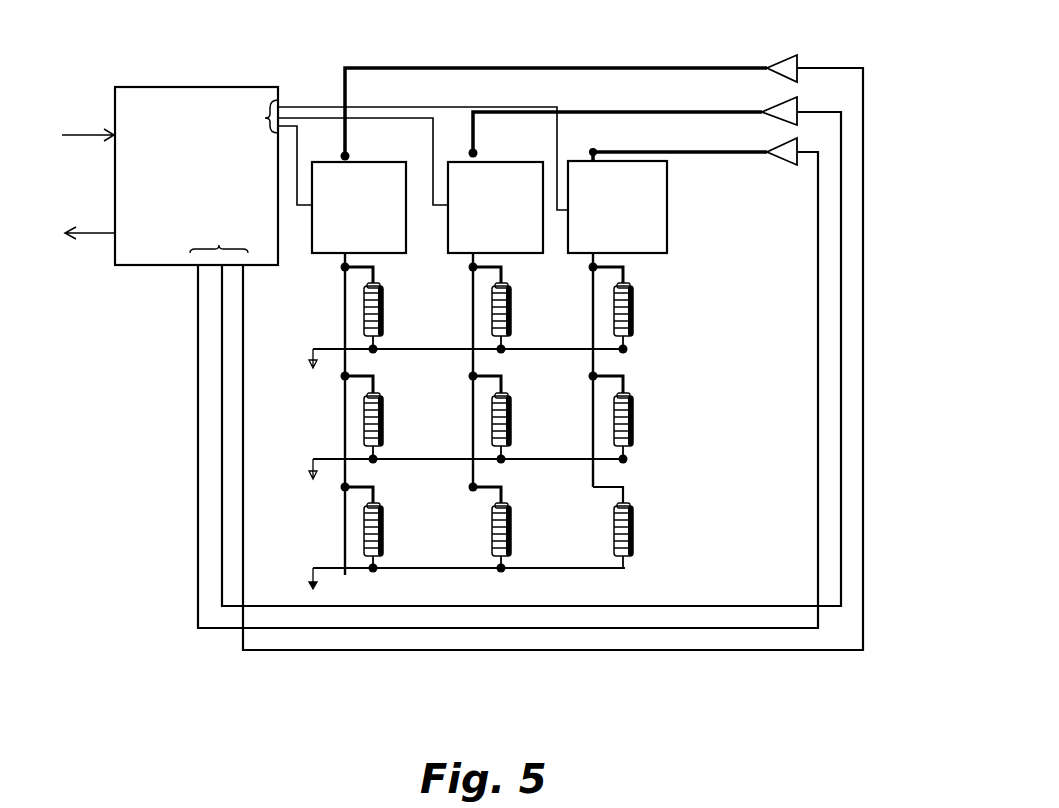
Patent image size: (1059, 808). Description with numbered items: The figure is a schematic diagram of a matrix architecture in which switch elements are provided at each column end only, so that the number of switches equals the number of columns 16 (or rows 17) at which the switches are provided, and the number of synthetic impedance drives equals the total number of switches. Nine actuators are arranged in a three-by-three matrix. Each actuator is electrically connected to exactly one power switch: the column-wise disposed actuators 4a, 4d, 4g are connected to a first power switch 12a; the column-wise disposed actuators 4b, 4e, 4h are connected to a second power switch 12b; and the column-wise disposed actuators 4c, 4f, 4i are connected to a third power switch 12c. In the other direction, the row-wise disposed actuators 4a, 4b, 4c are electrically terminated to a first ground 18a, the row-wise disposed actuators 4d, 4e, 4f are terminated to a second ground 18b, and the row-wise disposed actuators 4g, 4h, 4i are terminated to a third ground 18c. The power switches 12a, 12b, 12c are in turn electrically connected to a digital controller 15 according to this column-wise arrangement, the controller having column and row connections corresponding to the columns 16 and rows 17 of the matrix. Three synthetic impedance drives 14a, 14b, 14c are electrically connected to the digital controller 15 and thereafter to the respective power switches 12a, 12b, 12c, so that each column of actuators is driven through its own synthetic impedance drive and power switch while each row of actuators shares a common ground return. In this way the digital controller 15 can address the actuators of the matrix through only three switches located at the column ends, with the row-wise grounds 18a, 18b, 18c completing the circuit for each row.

The actuator 4a is at (378, 308).
The actuator 4b is at (506, 308).
The actuator 4c is at (627, 308).
The actuator 4d is at (378, 418).
The actuator 4e is at (506, 418).
The actuator 4f is at (626, 418).
The actuator 4g is at (378, 528).
The actuator 4h is at (506, 528).
The actuator 4i is at (626, 527).
The power switch 12a is at (406, 243).
The power switch 12b is at (543, 247).
The power switch 12c is at (667, 207).
The synthetic impedance drive 14a is at (783, 55).
The synthetic impedance drive 14b is at (778, 100).
The synthetic impedance drive 14c is at (778, 165).
The digital controller 15 is at (204, 86).
The columns 16 is at (256, 102).
The rows 17 is at (208, 240).
The ground 18a is at (311, 372).
The ground 18b is at (312, 482).
The ground 18c is at (311, 587).